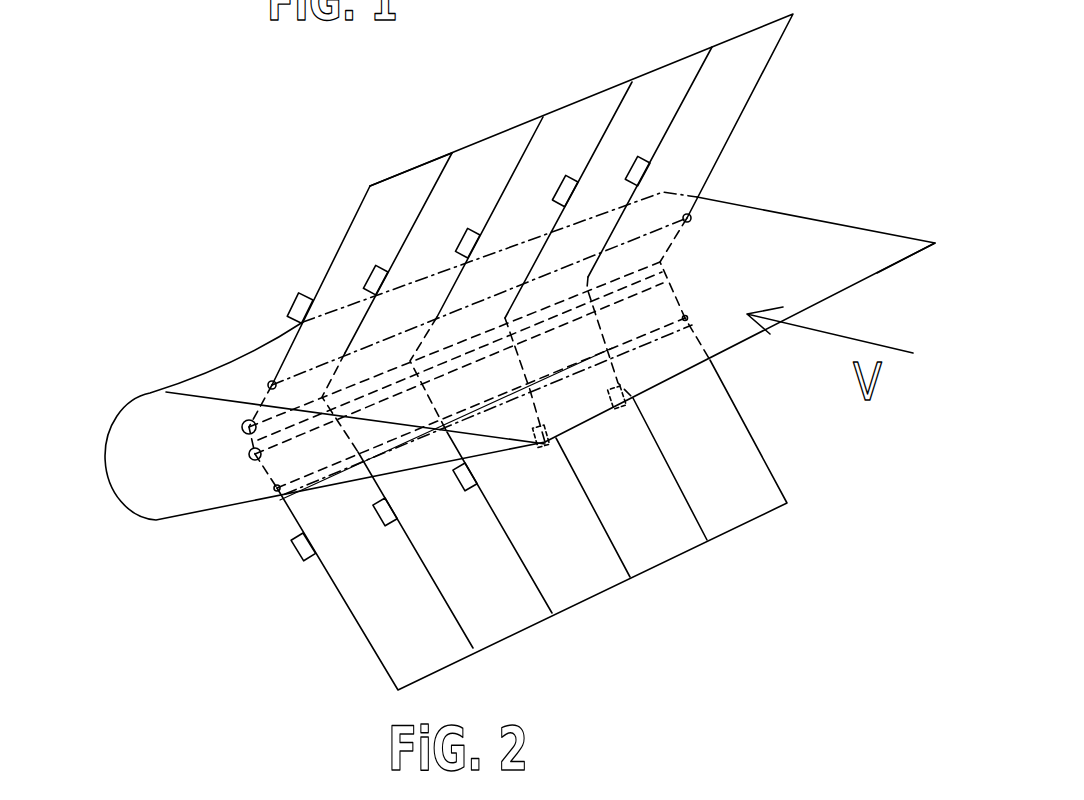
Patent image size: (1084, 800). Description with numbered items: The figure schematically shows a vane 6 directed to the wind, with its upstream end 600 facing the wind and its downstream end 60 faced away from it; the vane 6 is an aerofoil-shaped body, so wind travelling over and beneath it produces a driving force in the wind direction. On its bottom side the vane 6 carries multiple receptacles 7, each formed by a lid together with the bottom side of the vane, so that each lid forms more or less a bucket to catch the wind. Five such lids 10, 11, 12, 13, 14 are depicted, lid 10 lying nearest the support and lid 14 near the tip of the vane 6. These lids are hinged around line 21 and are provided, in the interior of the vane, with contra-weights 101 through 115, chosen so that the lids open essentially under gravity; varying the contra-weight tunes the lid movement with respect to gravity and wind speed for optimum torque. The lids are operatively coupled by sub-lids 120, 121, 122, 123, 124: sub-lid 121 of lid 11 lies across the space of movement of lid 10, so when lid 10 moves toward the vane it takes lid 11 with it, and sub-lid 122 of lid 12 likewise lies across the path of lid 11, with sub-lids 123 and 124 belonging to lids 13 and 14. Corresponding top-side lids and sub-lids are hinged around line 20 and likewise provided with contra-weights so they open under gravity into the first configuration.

The vane 6 is at (787, 212).
The receptacles 7 is at (345, 268).
The lid 10 is at (393, 177).
The lid 11 is at (490, 138).
The lid 12 is at (578, 100).
The lid 13 is at (657, 68).
The lid 14 is at (744, 34).
The hinge line 20 is at (689, 218).
The hinge line 21 is at (272, 487).
The downstream end 60 is at (105, 477).
The contra-weight 101 is at (249, 455).
The contra-weight 115 is at (663, 282).
The sub-lid 120 is at (298, 310).
The sub-lid 121 is at (378, 272).
The sub-lid 122 is at (468, 235).
The sub-lid 123 is at (558, 191).
The sub-lid 124 is at (638, 166).
The upstream end 600 is at (877, 273).